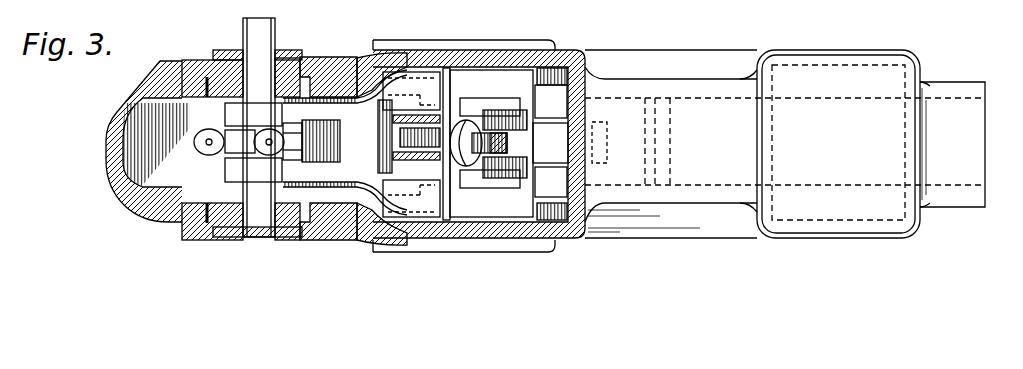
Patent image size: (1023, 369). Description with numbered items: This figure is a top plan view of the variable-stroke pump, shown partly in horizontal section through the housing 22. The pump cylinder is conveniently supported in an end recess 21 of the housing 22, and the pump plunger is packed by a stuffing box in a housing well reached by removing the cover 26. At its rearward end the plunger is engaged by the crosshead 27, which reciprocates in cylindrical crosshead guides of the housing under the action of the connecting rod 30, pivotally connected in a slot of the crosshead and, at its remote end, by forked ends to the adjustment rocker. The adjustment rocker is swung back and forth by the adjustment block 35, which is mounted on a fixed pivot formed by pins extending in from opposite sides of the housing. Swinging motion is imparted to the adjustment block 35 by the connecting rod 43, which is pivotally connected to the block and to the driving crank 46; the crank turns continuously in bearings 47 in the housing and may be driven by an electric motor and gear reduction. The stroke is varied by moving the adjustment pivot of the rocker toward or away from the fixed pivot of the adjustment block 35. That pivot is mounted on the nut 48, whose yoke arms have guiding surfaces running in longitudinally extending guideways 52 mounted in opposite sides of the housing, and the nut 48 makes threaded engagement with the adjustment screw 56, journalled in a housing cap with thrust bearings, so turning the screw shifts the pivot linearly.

The end recess 21 is at (948, 97).
The housing 22 is at (615, 57).
The cover 26 is at (835, 135).
The crosshead 27 is at (680, 135).
The connecting rod 30 is at (570, 137).
The adjustment block 35 is at (332, 218).
The connecting rod 43 is at (232, 152).
The driving crank 46 is at (313, 60).
The bearings 47 is at (290, 60).
The nut 48 is at (467, 128).
The guideways 52 is at (553, 50).
The adjustment screw 56 is at (507, 144).